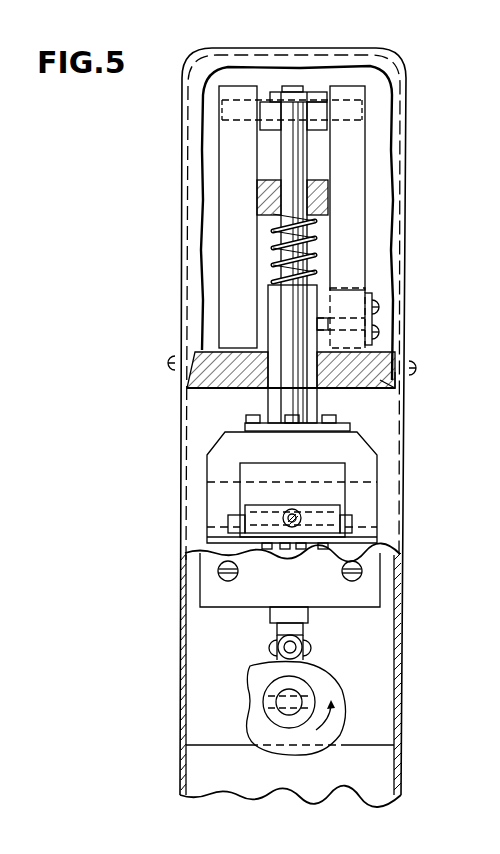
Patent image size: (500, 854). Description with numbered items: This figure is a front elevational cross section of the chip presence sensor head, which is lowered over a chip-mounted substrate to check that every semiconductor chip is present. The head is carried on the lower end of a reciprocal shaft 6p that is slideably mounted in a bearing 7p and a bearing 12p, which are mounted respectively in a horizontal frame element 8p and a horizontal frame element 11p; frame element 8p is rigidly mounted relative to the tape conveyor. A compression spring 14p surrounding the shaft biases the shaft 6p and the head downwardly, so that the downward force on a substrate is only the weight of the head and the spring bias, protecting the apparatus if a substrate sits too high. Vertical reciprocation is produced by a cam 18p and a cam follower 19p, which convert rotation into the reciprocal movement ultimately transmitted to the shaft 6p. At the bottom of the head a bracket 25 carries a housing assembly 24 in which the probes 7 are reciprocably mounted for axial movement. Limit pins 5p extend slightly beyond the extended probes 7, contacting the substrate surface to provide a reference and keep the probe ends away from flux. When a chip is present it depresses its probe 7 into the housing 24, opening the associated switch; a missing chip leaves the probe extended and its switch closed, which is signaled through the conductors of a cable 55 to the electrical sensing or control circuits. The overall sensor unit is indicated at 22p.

The limit pins 5p is at (316, 547).
The reciprocal shaft 6p is at (296, 162).
The probes 7 is at (292, 545).
The bearing 7p is at (372, 355).
The horizontal frame element 8p is at (395, 385).
The horizontal frame element 11p is at (295, 200).
The bearing 12p is at (295, 201).
The compression spring 14p is at (318, 258).
The cam 18p is at (263, 682).
The cam follower 19p is at (309, 645).
The switch unit housing 22p is at (412, 461).
The housing assembly 24 is at (352, 522).
The bracket 25 is at (230, 448).
The cable 55 is at (296, 510).